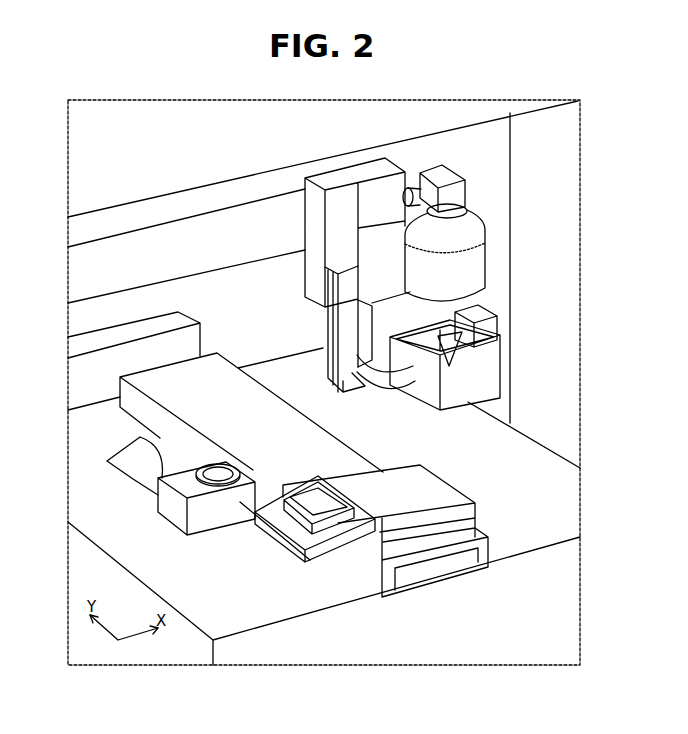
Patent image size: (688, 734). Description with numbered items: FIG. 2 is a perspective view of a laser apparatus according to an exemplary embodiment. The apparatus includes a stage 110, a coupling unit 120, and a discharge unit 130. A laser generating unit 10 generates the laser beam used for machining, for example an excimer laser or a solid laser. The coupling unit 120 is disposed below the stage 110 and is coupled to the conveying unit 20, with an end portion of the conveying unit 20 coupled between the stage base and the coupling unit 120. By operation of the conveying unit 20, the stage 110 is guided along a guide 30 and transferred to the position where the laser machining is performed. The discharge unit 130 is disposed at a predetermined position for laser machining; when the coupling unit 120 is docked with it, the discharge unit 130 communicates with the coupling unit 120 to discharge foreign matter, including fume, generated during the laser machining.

The laser generating unit 10 is at (488, 253).
The conveying unit 20 is at (440, 490).
The guide 30 is at (187, 403).
The stage 110 is at (385, 598).
The coupling unit 120 is at (284, 535).
The discharge unit 130 is at (203, 510).